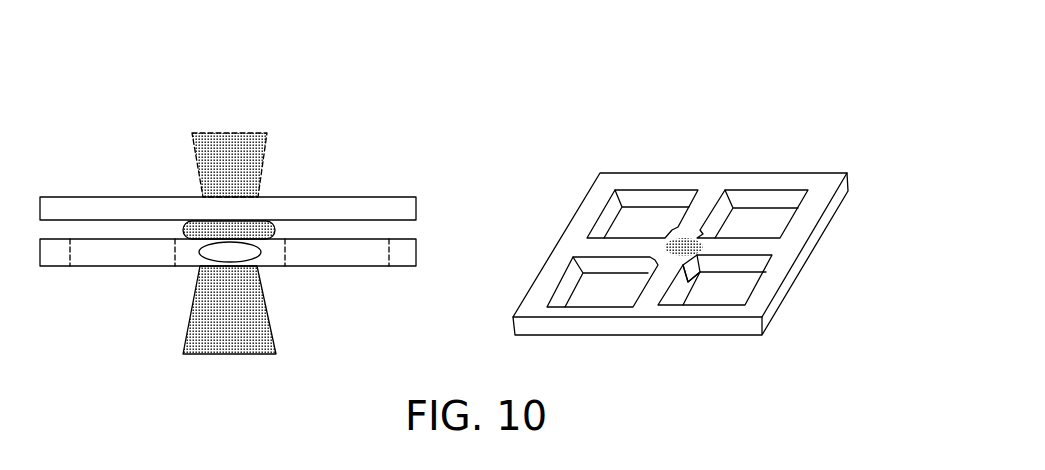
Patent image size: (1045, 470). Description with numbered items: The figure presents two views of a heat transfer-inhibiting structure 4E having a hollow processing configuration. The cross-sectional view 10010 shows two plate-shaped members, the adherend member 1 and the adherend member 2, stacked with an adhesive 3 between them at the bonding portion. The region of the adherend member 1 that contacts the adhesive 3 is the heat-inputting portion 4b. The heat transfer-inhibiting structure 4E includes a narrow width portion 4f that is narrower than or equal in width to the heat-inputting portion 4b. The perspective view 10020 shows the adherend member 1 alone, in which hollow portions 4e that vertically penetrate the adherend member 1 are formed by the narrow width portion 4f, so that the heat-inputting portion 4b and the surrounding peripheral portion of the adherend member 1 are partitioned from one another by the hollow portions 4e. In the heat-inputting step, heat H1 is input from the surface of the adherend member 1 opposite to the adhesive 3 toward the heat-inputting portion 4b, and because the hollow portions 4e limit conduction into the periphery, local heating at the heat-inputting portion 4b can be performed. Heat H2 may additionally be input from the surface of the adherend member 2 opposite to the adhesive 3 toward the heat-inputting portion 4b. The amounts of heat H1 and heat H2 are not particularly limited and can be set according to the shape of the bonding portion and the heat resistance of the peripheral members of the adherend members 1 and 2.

The adherend member 1 is at (418, 252).
The adherend member 2 is at (418, 207).
The adhesive 3 is at (193, 227).
The heat-inputting portion 4b is at (258, 196).
The hollow portion 4e is at (633, 222).
The narrow width portion 4f is at (747, 263).
The heat transfer-inhibiting structure 4E is at (400, 176).
The heat H1 is at (268, 313).
The heat H2 is at (197, 163).
The cross-sectional view 10010 is at (430, 88).
The perspective view 10020 is at (866, 88).